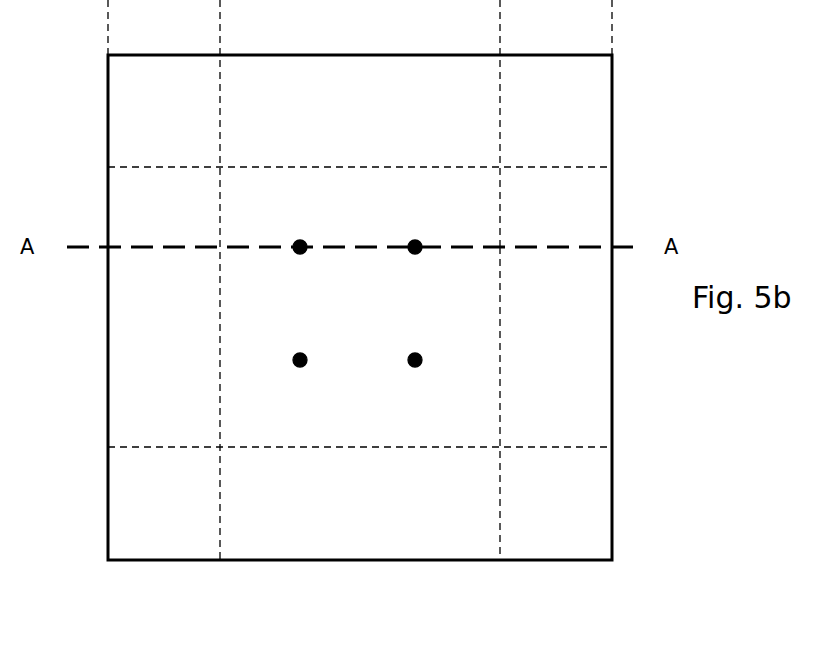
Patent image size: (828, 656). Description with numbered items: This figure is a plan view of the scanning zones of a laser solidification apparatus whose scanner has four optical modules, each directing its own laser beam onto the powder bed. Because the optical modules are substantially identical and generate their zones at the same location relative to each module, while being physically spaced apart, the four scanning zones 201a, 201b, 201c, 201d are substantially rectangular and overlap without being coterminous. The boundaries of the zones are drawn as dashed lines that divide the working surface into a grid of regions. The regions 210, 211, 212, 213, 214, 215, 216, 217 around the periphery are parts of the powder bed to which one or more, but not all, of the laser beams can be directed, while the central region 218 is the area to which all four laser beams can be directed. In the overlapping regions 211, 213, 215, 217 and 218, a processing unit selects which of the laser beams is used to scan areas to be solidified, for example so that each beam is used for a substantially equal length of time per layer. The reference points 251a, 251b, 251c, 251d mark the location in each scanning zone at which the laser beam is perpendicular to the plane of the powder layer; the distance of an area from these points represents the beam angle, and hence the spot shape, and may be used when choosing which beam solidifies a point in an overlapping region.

The region of the powder bed 210 is at (164, 111).
The region of the powder bed 211 is at (360, 111).
The region of the powder bed 212 is at (556, 111).
The region of the powder bed 213 is at (556, 307).
The region of the powder bed 214 is at (556, 503).
The region of the powder bed 215 is at (360, 503).
The region of the powder bed 216 is at (164, 503).
The region of the powder bed 217 is at (164, 307).
The central region 218 is at (360, 307).
The scanning zone 201a is at (489, 78).
The scanning zone 201b is at (582, 443).
The scanning zone 201c is at (511, 535).
The scanning zone 201d is at (228, 537).
The reference point 251a is at (287, 230).
The reference point 251b is at (434, 216).
The reference point 251c is at (288, 378).
The reference point 251d is at (423, 378).